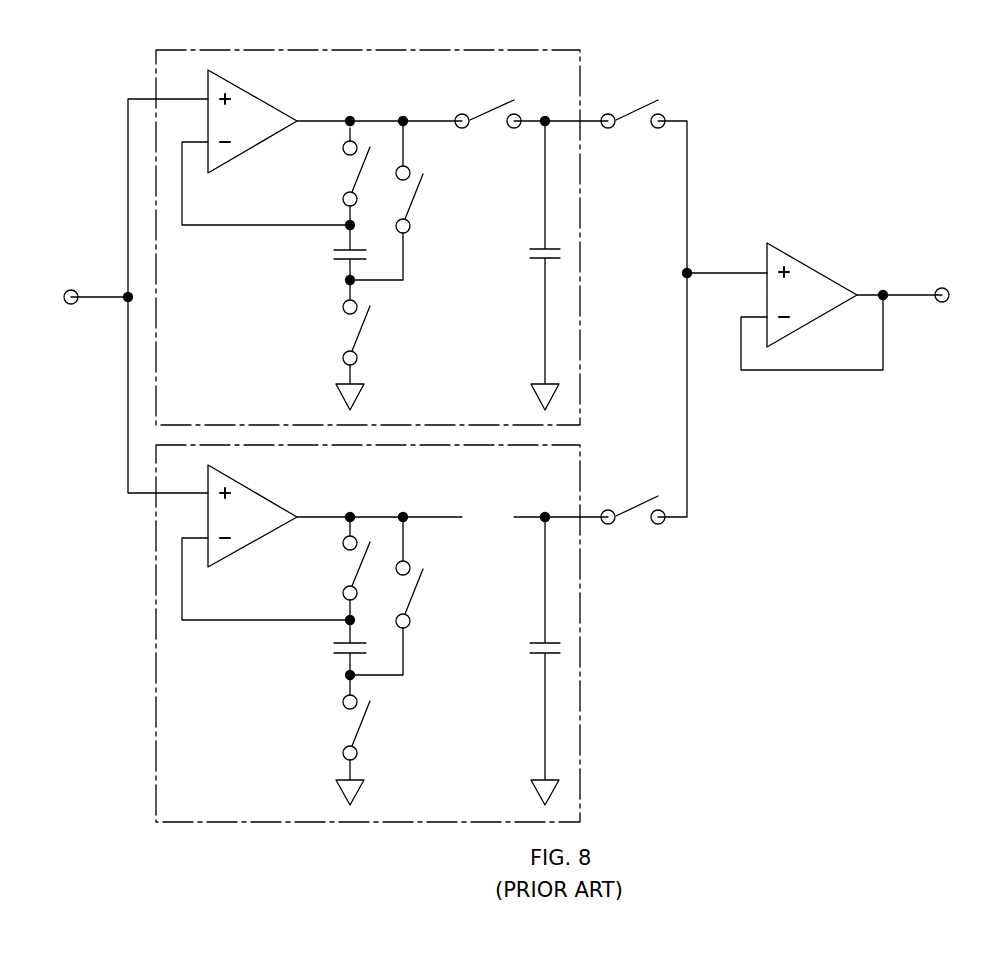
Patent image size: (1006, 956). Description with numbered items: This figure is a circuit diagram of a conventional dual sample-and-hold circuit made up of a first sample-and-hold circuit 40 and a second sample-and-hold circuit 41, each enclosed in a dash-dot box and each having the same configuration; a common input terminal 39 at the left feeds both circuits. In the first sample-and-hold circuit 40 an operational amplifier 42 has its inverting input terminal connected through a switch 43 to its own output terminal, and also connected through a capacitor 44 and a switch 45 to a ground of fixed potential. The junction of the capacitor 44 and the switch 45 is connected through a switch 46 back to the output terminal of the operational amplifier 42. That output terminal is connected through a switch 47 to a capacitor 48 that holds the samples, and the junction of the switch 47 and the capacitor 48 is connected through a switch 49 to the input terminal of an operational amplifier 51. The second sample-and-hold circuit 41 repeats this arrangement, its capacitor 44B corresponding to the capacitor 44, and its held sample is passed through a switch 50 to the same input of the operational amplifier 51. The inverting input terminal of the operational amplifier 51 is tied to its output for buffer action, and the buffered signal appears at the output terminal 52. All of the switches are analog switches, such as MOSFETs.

The input terminal 39 is at (69, 290).
The first sample-and-hold circuit 40 is at (156, 121).
The second sample-and-hold circuit 41 is at (156, 605).
The operational amplifier 42 is at (265, 115).
The switch 43 is at (345, 168).
The capacitor 44 is at (334, 252).
The capacitor 44B is at (330, 648).
The switch 45 is at (346, 328).
The switch 46 is at (417, 203).
The switch 47 is at (490, 123).
The capacitor 48 is at (528, 252).
The switch 49 is at (632, 125).
The switch 50 is at (632, 522).
The operational amplifier 51 is at (825, 292).
The output terminal 52 is at (942, 303).